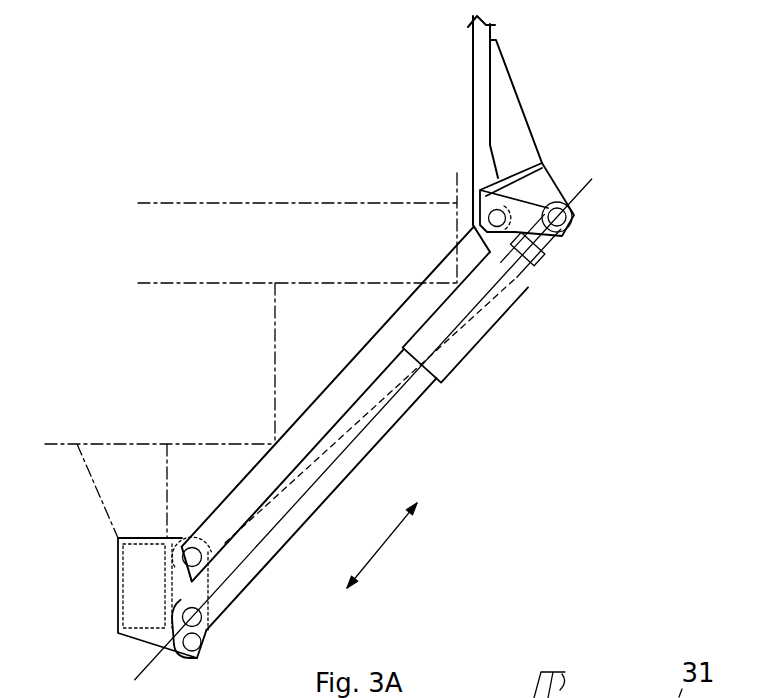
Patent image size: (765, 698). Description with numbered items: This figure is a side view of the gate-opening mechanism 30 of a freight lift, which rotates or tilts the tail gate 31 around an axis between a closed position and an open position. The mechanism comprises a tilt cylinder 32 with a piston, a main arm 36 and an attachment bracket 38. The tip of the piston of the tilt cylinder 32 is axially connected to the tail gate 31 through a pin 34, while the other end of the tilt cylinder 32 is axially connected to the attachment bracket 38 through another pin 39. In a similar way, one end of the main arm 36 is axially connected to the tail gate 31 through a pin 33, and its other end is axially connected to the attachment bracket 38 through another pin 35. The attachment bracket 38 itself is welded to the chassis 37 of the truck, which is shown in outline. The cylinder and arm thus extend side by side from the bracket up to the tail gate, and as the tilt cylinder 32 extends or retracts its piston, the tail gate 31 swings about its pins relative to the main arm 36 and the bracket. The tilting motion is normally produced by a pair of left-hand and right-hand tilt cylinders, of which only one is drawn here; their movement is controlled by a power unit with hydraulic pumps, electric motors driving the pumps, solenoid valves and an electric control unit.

The gate-opening mechanism 30 is at (477, 434).
The tail gate 31 is at (558, 128).
The tilt cylinder 32 is at (367, 443).
The pin 33 is at (489, 218).
The pin 34 is at (572, 222).
The pin 35 is at (178, 537).
The main arm 36 is at (312, 425).
The chassis 37 is at (372, 218).
The attachment bracket 38 is at (127, 578).
The pin 39 is at (212, 635).